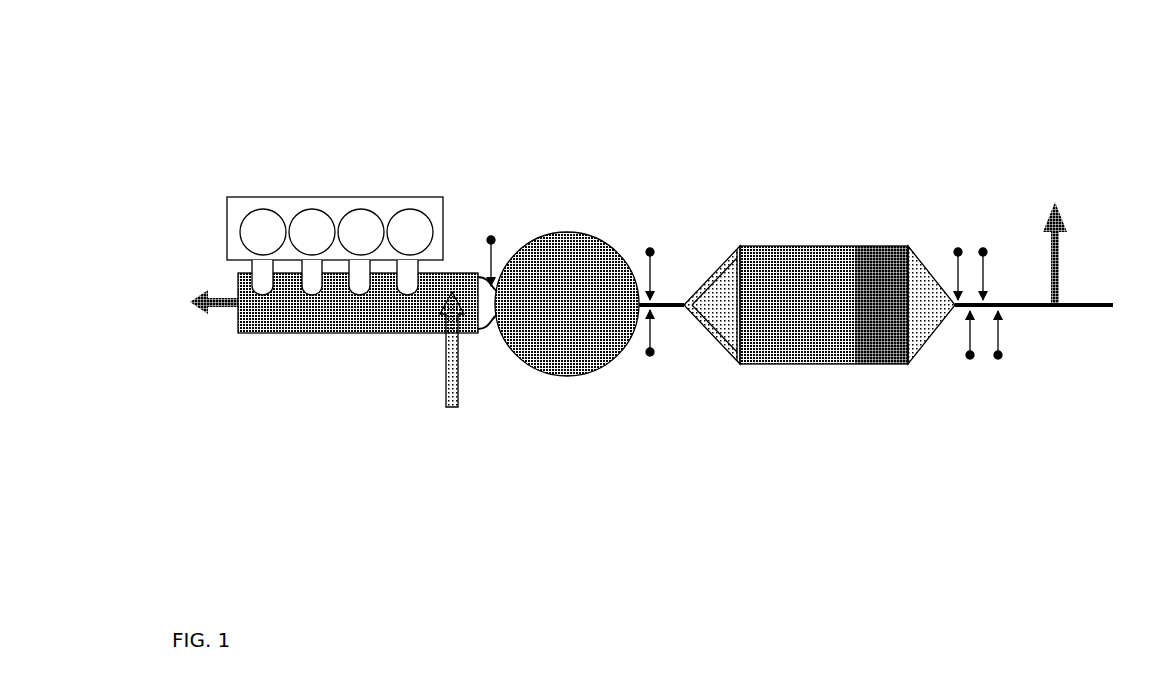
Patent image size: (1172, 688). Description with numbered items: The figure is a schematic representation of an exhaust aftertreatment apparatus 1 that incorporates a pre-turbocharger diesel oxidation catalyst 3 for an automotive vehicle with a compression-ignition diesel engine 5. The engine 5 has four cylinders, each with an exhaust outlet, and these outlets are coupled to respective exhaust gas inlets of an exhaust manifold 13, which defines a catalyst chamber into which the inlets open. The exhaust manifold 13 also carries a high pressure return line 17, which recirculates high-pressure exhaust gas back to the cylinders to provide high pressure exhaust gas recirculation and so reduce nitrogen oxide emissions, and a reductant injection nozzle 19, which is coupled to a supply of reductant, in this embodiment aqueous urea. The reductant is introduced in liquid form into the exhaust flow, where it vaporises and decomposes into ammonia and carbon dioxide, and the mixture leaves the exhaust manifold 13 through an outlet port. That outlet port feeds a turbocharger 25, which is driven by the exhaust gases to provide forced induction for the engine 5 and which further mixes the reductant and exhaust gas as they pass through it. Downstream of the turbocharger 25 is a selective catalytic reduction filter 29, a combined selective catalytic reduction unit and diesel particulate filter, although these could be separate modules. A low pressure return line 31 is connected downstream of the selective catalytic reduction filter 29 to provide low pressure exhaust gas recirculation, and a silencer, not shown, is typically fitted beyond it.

The exhaust aftertreatment apparatus 1 is at (902, 115).
The pre-turbocharger diesel oxidation catalyst 3 is at (284, 317).
The engine 5 is at (379, 191).
The exhaust manifold 13 is at (325, 364).
The high pressure return line 17 is at (216, 308).
The reductant injection nozzle 19 is at (440, 328).
The turbocharger 25 is at (538, 398).
The selective catalytic reduction filter 29 is at (790, 393).
The low pressure return line 31 is at (1060, 268).